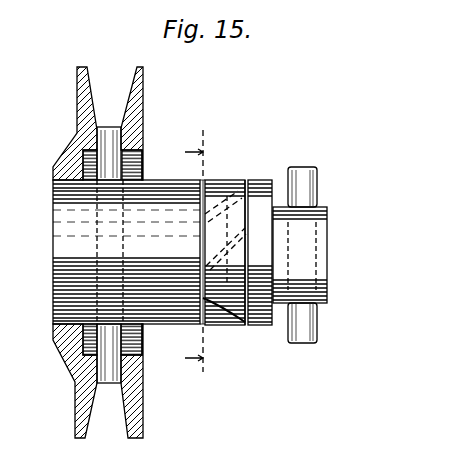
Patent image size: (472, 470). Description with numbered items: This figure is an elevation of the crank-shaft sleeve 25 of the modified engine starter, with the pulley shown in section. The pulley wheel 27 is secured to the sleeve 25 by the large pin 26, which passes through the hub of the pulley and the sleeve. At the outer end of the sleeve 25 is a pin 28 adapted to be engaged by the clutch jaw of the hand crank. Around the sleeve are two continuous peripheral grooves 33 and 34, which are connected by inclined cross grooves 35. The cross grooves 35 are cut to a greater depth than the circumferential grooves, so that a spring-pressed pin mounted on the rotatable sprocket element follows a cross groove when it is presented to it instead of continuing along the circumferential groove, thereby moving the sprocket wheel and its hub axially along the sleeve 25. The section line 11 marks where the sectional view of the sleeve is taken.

The section line 11 is at (193, 256).
The sleeve 25 is at (73, 238).
The large pin 26 is at (97, 153).
The pulley wheel 27 is at (82, 93).
The pin 28 is at (318, 186).
The peripheral groove 33 is at (250, 184).
The peripheral groove 34 is at (210, 184).
The inclined cross grooves 35 is at (232, 342).